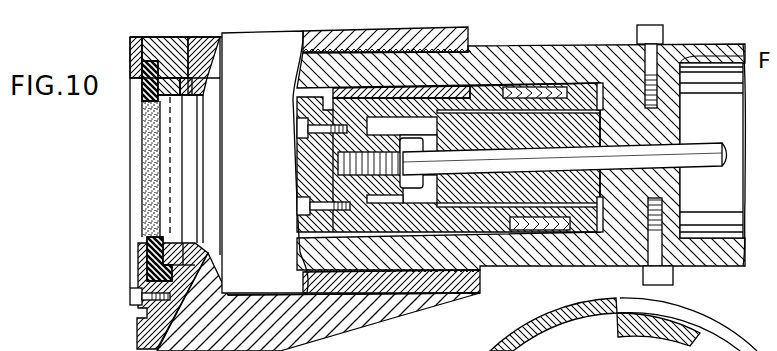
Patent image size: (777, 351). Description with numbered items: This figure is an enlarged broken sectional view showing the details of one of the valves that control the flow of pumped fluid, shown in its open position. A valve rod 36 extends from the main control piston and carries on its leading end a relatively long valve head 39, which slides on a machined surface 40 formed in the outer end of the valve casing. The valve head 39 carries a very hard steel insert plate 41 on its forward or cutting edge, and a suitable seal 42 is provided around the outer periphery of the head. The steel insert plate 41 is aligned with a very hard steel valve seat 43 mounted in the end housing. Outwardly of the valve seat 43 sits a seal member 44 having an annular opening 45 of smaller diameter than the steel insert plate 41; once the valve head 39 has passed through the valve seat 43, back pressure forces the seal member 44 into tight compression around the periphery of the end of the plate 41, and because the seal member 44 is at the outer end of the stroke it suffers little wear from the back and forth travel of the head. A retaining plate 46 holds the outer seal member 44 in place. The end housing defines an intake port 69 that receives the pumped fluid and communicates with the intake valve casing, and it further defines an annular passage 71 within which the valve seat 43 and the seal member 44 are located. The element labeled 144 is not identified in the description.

The valve rod 36 is at (710, 143).
The valve head 39 is at (478, 88).
The machined surface 40 is at (452, 232).
The steel insert plate 41 is at (297, 167).
The seal 42 is at (523, 232).
The valve seat 43 is at (187, 105).
The seal member 44 is at (150, 248).
The annular opening 45 is at (153, 228).
The retaining plate 46 is at (140, 280).
The intake port 69 is at (266, 56).
The annular passage 71 is at (160, 112).
The end cylinder 144 is at (737, 177).